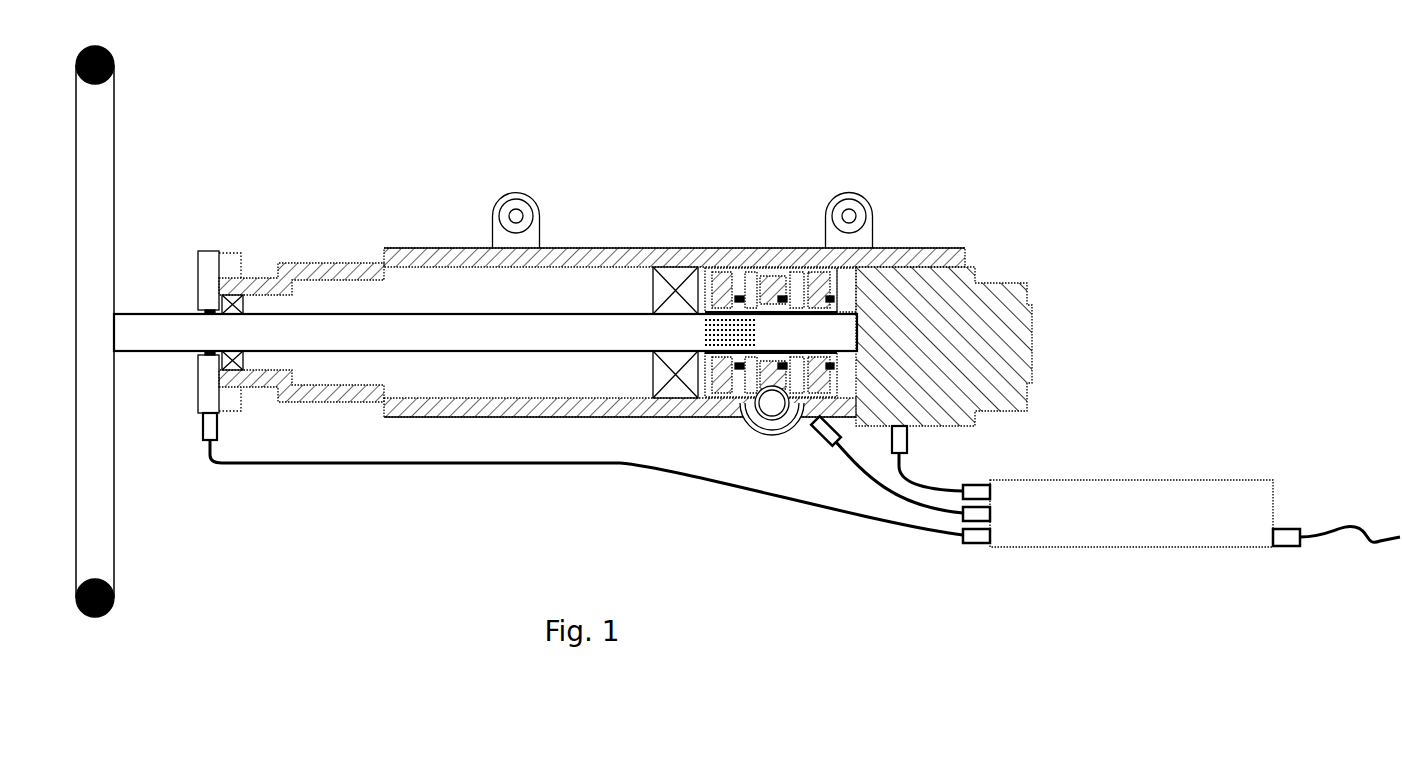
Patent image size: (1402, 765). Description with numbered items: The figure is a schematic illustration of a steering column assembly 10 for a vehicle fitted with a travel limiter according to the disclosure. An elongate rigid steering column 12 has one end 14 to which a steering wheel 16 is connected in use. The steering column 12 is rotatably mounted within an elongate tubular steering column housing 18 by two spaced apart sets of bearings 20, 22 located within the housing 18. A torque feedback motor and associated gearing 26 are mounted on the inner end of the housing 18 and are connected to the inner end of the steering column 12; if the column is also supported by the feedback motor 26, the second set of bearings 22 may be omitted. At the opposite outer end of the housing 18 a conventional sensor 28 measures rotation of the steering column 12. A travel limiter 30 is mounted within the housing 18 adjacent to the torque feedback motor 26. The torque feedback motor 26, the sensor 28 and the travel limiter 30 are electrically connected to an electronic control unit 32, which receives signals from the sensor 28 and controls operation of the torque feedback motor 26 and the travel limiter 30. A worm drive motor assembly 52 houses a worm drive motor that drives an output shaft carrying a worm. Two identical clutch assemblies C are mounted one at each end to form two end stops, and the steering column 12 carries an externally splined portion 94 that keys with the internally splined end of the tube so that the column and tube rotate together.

The steering column assembly 10 is at (567, 240).
The steering column 12 is at (330, 322).
The end of the steering column 14 is at (133, 325).
The steering wheel 16 is at (105, 520).
The steering column housing 18 is at (610, 248).
The bearings 20 is at (250, 283).
The bearings 22 is at (680, 290).
The torque feedback motor and associated gearing 26 is at (990, 293).
The sensor 28 is at (205, 265).
The travel limiter 30 is at (848, 288).
The electronic control unit 32 is at (1197, 505).
The worm drive motor assembly 52 is at (779, 441).
The externally splined portion 94 is at (720, 335).
The clutch assemblies C is at (730, 290).